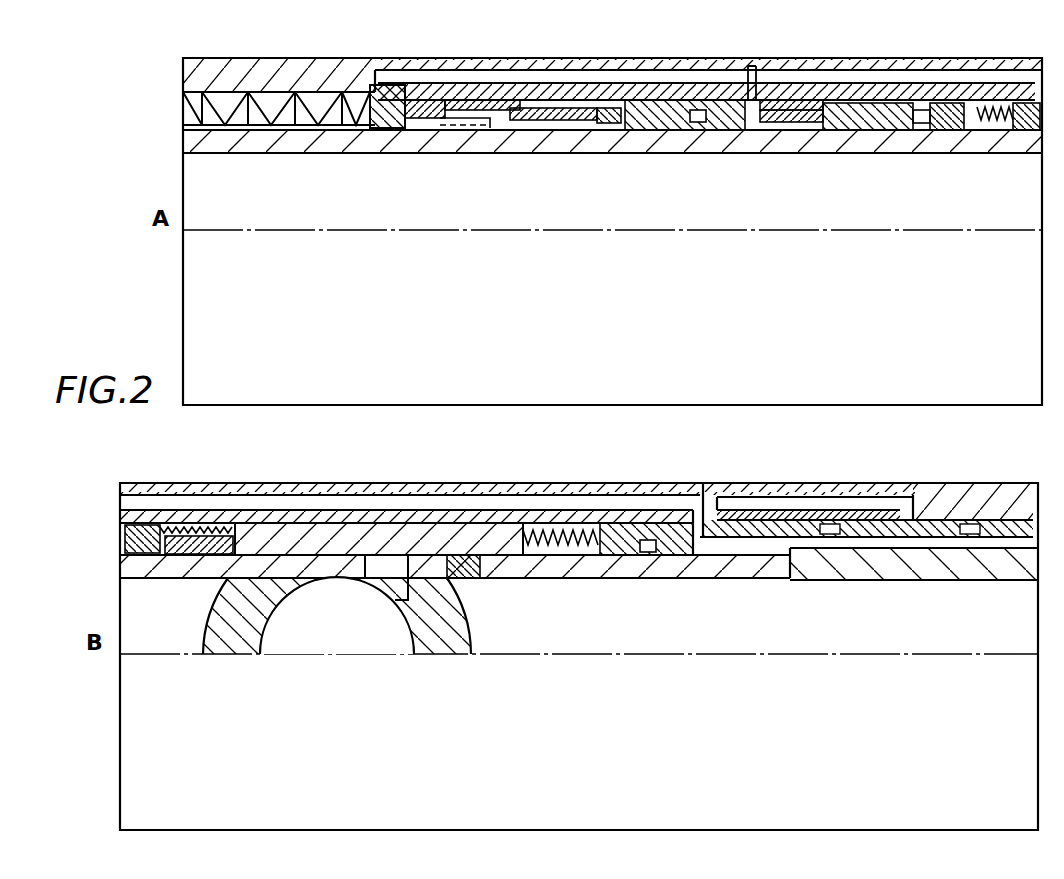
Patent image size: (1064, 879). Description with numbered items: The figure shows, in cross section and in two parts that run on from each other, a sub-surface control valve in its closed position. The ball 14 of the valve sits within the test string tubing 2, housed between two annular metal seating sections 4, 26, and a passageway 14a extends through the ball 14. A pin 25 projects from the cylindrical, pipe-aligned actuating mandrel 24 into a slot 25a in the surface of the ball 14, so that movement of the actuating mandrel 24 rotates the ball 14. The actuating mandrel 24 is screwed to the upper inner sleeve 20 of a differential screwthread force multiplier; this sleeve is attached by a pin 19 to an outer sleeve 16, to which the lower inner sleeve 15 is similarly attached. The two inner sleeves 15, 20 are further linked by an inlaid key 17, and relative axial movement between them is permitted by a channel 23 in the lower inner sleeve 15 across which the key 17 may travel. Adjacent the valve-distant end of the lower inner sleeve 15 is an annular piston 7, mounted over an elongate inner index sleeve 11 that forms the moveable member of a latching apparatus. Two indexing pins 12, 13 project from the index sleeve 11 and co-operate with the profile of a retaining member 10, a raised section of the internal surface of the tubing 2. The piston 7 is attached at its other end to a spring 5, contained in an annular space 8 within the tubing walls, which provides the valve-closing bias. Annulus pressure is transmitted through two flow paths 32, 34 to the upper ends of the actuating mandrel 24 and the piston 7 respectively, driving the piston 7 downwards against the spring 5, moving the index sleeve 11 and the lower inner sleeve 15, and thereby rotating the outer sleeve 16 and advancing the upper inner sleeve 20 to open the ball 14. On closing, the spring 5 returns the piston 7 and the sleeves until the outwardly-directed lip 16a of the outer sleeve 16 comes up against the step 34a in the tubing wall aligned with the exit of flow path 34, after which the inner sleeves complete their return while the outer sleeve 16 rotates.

The test string tubing 2 is at (372, 222).
The annular metal seating section 4 is at (228, 553).
The spring 5 is at (358, 95).
The annular piston 7 is at (663, 97).
The annular space 8 is at (313, 97).
The retaining member 10 is at (450, 122).
The inner index sleeve 11 is at (563, 122).
The indexing pin 12 is at (613, 122).
The indexing pin 13 is at (472, 110).
The ball 14 is at (330, 565).
The passageway 14a is at (375, 638).
The lower inner sleeve 15 is at (880, 130).
The outer sleeve 16 is at (882, 110).
The outwardly-directed lip 16a is at (750, 95).
The inlaid key 17 is at (850, 100).
The pin 19 is at (943, 110).
The upper inner sleeve 20 is at (1000, 107).
The channel 23 is at (823, 122).
The actuating mandrel 24 is at (303, 540).
The pin 25 is at (385, 565).
The slot 25a is at (397, 592).
The annular metal seating section 26 is at (457, 555).
The flow path 32 is at (950, 537).
The flow path 34 is at (597, 497).
The step 34a is at (757, 80).